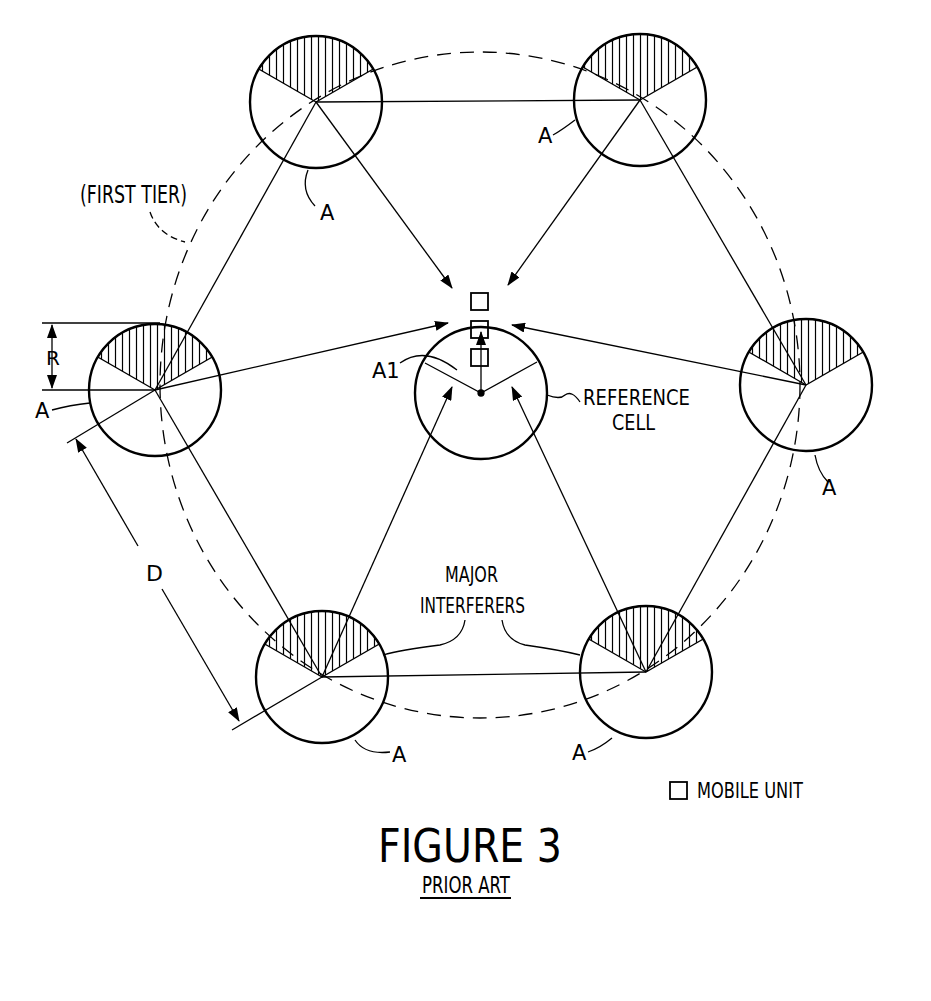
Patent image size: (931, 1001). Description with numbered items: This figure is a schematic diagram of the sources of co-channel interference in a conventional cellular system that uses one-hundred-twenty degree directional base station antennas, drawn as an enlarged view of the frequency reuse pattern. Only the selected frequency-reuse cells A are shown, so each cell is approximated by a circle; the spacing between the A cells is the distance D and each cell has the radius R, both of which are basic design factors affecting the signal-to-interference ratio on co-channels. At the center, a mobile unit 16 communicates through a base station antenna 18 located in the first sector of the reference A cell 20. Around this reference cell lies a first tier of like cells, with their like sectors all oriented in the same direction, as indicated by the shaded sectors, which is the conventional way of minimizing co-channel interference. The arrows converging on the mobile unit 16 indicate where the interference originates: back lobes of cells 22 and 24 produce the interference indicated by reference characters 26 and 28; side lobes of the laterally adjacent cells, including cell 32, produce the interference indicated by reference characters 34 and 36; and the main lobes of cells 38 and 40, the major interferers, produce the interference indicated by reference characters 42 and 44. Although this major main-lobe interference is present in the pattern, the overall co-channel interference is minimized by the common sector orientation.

The mobile unit 16 is at (478, 291).
The base station antenna 18 is at (527, 348).
The A cell 20 is at (460, 458).
The cell 22 is at (380, 134).
The cell 24 is at (630, 167).
The back lobe interference 26 is at (393, 202).
The back lobe interference 28 is at (560, 218).
The cell 32 is at (220, 407).
The side lobe interference 34 is at (280, 350).
The side lobe interference 36 is at (600, 336).
The cell 38 is at (278, 735).
The cell 40 is at (712, 679).
The main lobe interference 42 is at (392, 514).
The main lobe interference 44 is at (572, 511).